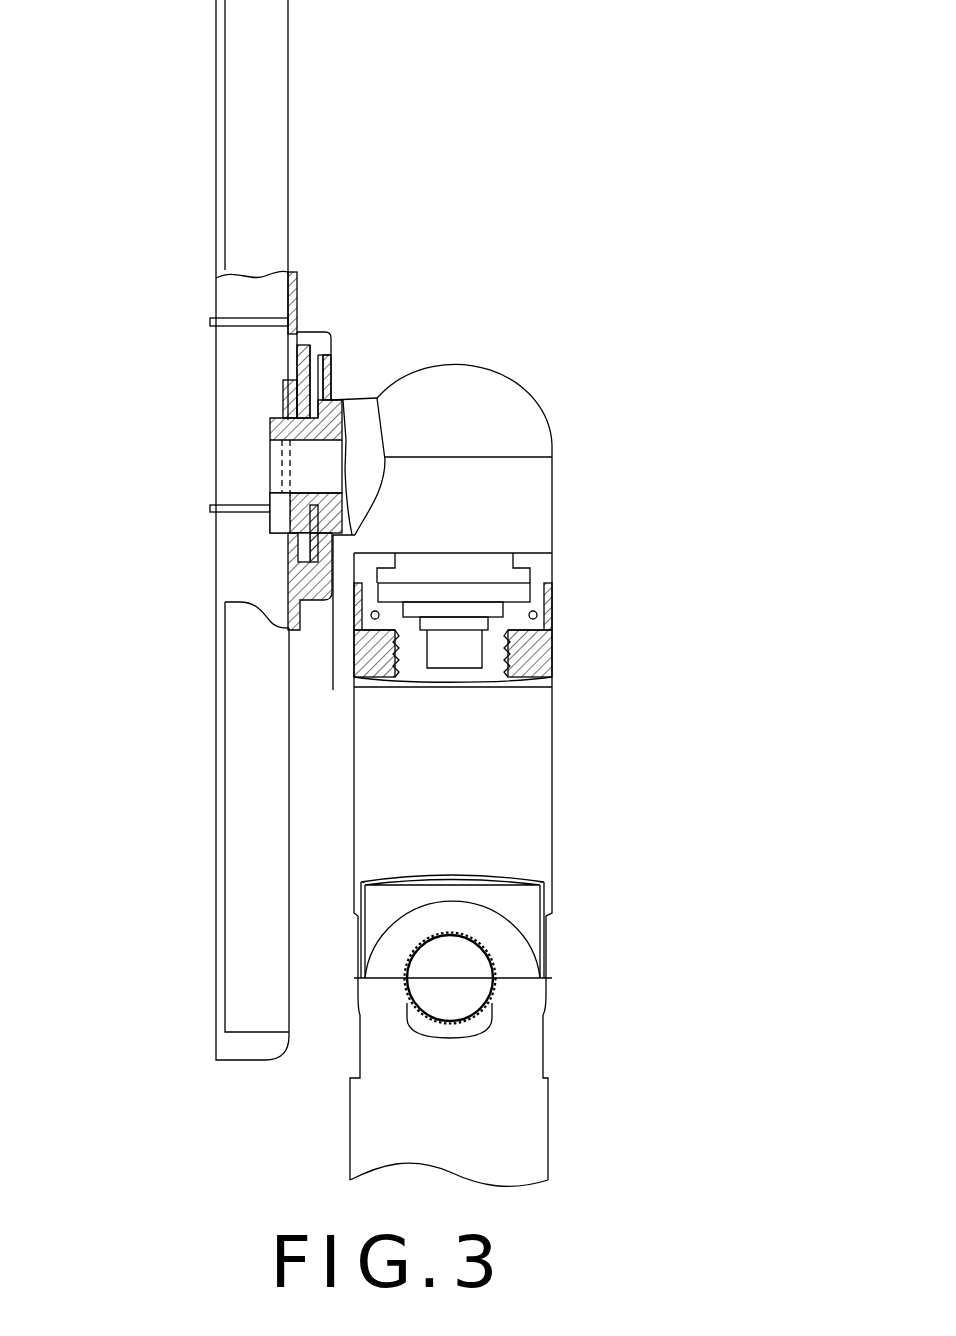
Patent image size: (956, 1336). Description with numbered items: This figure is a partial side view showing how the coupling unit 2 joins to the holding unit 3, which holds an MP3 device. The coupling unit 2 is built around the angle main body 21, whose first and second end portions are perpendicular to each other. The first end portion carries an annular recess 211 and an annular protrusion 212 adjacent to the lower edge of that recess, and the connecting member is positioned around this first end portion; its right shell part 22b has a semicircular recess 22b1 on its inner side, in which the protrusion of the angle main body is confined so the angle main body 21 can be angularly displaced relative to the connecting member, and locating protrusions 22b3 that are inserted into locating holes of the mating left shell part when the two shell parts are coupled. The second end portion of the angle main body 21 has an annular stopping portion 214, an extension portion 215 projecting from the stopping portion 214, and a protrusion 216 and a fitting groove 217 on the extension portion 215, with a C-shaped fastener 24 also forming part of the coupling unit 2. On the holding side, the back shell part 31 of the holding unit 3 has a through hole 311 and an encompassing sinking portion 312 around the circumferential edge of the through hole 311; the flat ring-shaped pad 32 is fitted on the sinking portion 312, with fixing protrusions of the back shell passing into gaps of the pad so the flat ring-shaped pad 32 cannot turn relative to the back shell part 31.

The coupling unit 2 is at (554, 407).
The angle main body 21 is at (538, 515).
The annular recess 211 is at (517, 570).
The annular protrusion 212 is at (552, 594).
The annular stopping portion 214 is at (345, 402).
The extension portion 215 is at (263, 467).
The protrusion 216 is at (273, 513).
The fitting groove 217 is at (262, 455).
The right shell part 22b is at (552, 603).
The semicircular recess 22b1 is at (528, 576).
The locating protrusions 22b3 is at (552, 642).
The C-shaped fastener 24 is at (280, 400).
The holding unit 3 is at (316, 167).
The back shell part 31 is at (220, 928).
The through hole 311 is at (332, 372).
The encompassing sinking portion 312 is at (303, 338).
The flat ring-shaped pad 32 is at (282, 382).